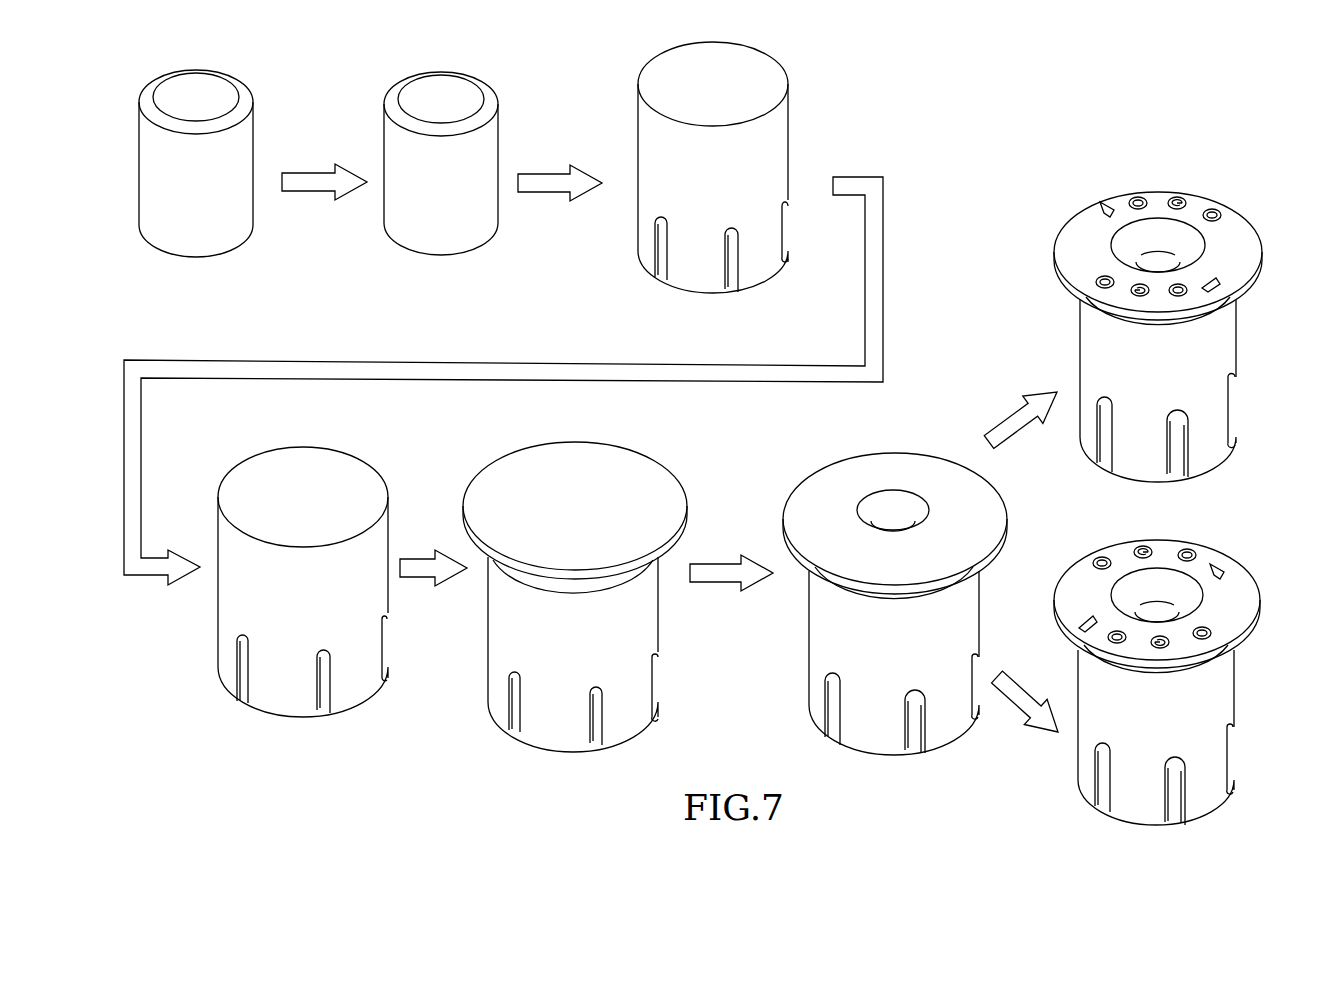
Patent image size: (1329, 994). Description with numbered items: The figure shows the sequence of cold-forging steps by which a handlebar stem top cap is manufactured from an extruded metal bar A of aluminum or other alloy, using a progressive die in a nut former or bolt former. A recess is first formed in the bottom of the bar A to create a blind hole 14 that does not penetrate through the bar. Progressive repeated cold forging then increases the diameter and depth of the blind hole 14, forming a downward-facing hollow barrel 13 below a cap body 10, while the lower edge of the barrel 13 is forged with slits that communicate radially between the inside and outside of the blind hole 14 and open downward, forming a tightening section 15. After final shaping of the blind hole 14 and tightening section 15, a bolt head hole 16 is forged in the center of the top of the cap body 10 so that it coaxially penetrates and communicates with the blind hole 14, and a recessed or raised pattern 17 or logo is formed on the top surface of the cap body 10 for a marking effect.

The extruded metal bar A is at (215, 85).
The cap body 10 is at (983, 507).
The hollow barrel 13 is at (700, 278).
The blind hole 14 is at (738, 276).
The tightening section 15 is at (323, 712).
The bolt head hole 16 is at (903, 500).
The pattern 17 is at (1223, 215).